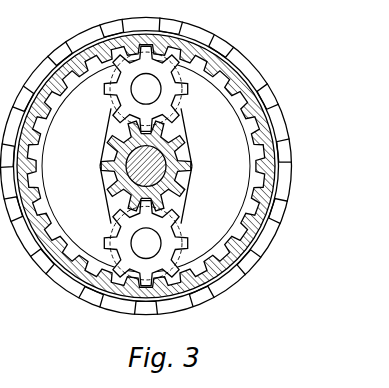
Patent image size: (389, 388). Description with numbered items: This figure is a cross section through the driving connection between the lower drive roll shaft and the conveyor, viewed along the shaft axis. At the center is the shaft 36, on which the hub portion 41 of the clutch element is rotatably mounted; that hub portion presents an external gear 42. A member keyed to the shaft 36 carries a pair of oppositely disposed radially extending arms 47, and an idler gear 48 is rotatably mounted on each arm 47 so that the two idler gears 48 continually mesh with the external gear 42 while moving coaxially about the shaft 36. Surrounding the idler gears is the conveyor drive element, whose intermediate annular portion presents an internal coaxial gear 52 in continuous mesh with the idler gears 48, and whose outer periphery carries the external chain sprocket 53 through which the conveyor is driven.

The shaft 36 is at (144, 166).
The hub portion 41 is at (118, 166).
The external gear 42 is at (133, 166).
The arms 47 is at (108, 114).
The idler gear 48 is at (184, 102).
The internal coaxial gear 52 is at (40, 132).
The external chain sprocket 53 is at (63, 50).